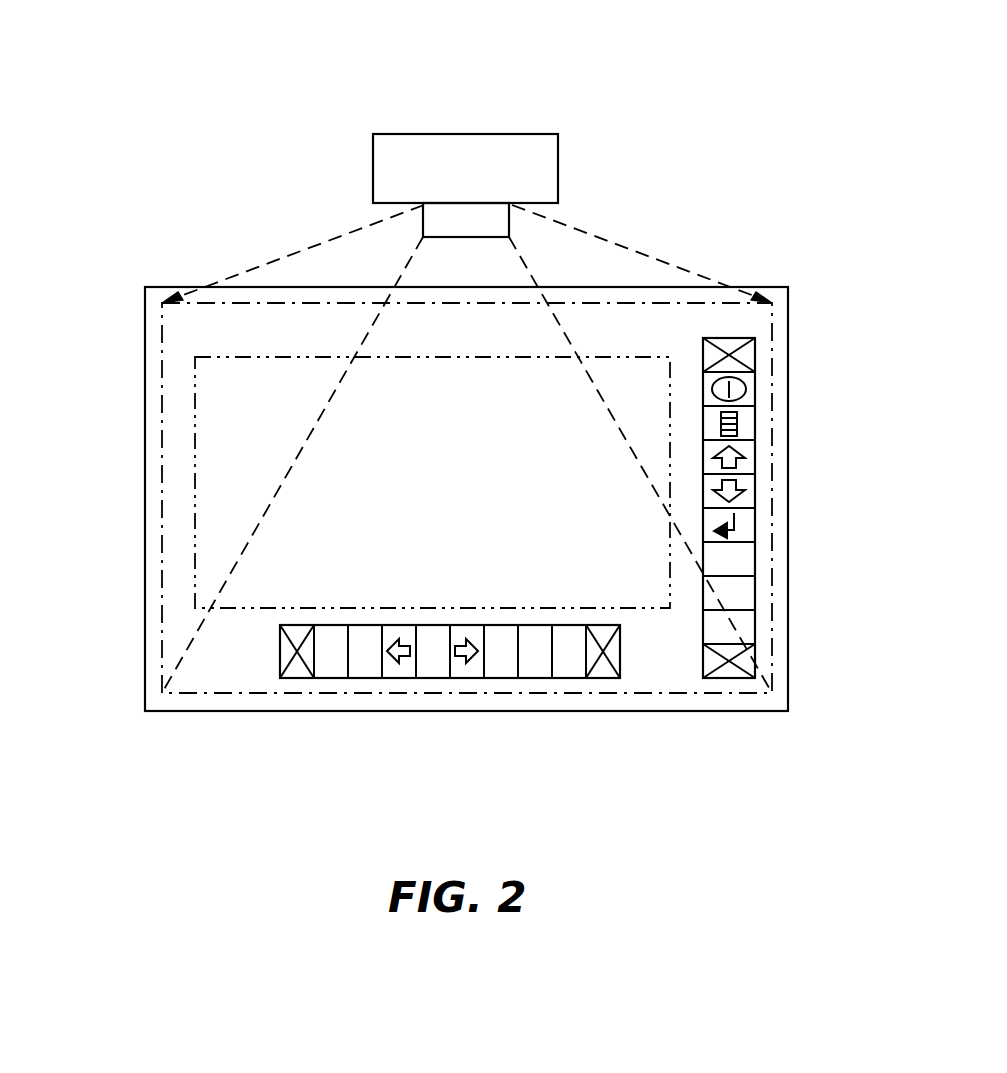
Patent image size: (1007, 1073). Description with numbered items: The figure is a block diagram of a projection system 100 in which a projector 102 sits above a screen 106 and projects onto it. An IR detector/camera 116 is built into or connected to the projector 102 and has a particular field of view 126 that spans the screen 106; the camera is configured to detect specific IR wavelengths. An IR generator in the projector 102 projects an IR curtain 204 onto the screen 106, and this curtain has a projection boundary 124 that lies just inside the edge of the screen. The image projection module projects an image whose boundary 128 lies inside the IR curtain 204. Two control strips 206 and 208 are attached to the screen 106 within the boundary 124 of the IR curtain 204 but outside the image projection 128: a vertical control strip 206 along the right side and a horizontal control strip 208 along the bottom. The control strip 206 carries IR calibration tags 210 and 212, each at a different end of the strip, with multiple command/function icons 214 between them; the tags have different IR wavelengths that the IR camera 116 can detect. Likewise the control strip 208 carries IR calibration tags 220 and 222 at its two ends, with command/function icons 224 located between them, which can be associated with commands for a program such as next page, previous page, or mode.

The projection system 100 is at (763, 126).
The projector 102 is at (465, 168).
The screen 106 is at (773, 287).
The IR detector/camera 116 is at (466, 220).
The projection boundary 124 is at (162, 374).
The field of view 126 is at (333, 235).
The image projection boundary 128 is at (467, 465).
The IR curtain 204 is at (467, 498).
The control strip 206 is at (688, 369).
The control strip 208 is at (262, 669).
The IR calibration tag 210 is at (755, 357).
The IR calibration tag 212 is at (748, 662).
The command/function icons 214 is at (755, 391).
The IR calibration tag 220 is at (298, 678).
The IR calibration tag 222 is at (603, 678).
The command/function icons 224 is at (398, 678).